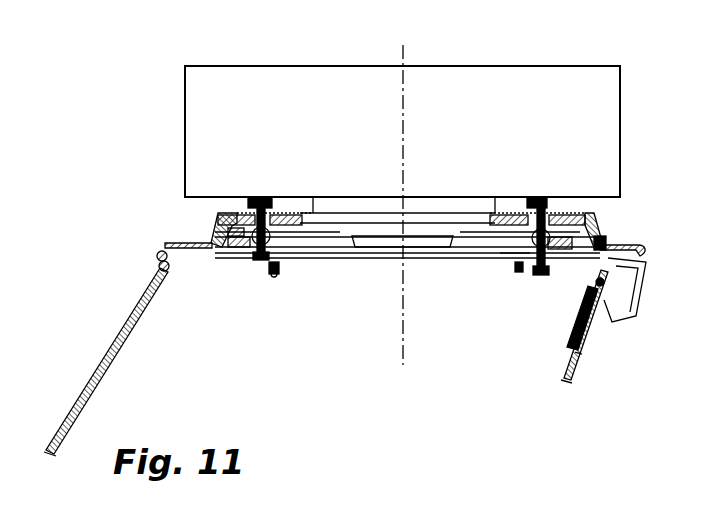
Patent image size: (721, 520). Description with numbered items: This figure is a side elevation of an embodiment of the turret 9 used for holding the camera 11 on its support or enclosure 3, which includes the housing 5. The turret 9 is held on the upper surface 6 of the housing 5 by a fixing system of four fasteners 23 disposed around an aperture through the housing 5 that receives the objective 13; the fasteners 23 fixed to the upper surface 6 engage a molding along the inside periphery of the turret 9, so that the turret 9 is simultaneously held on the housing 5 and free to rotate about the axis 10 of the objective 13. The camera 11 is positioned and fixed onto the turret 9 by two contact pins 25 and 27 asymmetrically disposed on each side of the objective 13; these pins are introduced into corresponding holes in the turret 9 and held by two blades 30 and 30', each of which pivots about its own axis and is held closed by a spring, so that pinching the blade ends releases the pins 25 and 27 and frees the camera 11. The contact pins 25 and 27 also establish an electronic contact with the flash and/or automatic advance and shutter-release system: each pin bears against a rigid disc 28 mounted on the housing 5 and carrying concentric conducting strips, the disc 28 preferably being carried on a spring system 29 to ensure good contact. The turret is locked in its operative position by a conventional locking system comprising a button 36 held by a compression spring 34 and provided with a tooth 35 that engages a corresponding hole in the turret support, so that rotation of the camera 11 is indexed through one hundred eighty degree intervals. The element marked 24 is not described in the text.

The support or enclosure 3 is at (88, 374).
The housing 5 is at (126, 302).
The upper surface 6 is at (180, 244).
The turret 9 is at (225, 221).
The axis 10 is at (403, 346).
The camera 11 is at (292, 72).
The objective 13 is at (410, 202).
The fasteners 23 is at (244, 248).
The washer 24 is at (236, 240).
The contact pin 25 is at (266, 258).
The contact pin 27 is at (528, 254).
The rigid disc 28 is at (250, 262).
The spring system 29 is at (280, 270).
The blade 30 is at (211, 198).
The blade 30' is at (558, 193).
The compression spring 34 is at (588, 300).
The tooth 35 is at (604, 240).
The button 36 is at (640, 300).